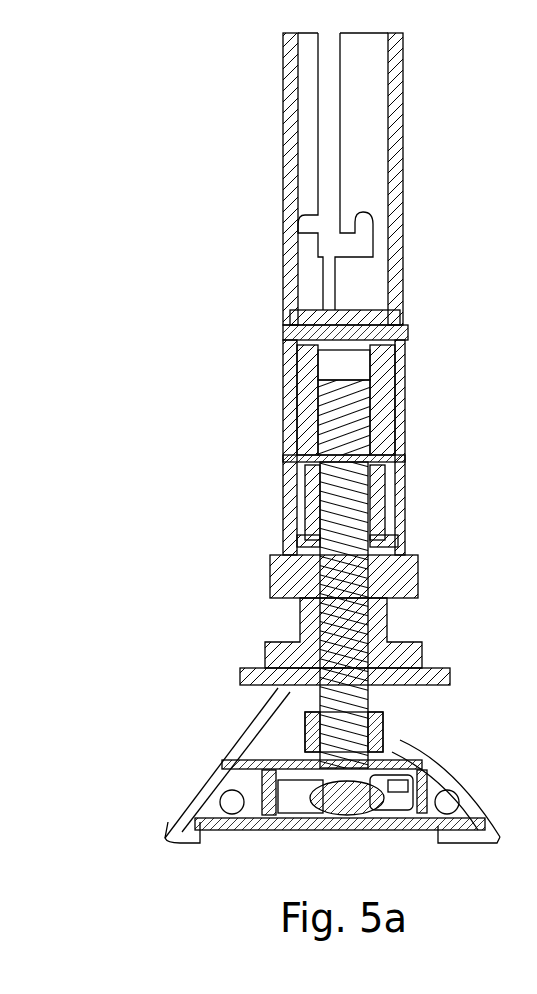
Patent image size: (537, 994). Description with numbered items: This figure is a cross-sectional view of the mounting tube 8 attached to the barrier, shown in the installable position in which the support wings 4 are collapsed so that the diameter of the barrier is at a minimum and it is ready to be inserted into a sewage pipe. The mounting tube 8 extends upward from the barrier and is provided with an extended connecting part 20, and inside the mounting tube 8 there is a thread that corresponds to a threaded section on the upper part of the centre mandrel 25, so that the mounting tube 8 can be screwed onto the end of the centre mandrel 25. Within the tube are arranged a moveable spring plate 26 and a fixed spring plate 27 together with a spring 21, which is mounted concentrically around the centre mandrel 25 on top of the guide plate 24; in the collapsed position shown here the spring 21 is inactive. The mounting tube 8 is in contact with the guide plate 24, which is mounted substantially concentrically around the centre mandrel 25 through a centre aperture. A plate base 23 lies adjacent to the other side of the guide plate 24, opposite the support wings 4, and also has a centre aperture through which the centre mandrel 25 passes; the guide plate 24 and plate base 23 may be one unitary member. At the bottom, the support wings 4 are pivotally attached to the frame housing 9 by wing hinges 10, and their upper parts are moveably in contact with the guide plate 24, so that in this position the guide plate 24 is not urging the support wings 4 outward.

The mounting tube 8 is at (205, 306).
The extended connecting part 20 is at (310, 307).
The centre mandrel 25 is at (348, 437).
The moveable spring plate 26 is at (303, 460).
The fixed spring plate 27 is at (303, 543).
The spring 21 is at (380, 517).
The plate base 23 is at (395, 636).
The guide plate 24 is at (243, 668).
The frame housing 9 is at (400, 765).
The support wing 4 is at (472, 780).
The wing hinge 10 is at (223, 798).